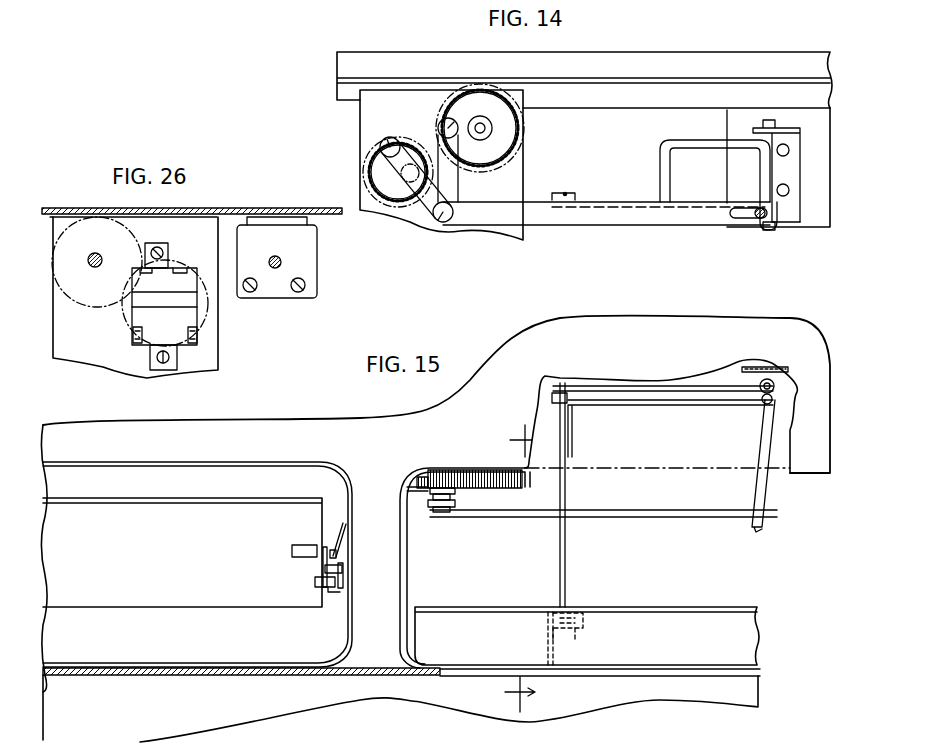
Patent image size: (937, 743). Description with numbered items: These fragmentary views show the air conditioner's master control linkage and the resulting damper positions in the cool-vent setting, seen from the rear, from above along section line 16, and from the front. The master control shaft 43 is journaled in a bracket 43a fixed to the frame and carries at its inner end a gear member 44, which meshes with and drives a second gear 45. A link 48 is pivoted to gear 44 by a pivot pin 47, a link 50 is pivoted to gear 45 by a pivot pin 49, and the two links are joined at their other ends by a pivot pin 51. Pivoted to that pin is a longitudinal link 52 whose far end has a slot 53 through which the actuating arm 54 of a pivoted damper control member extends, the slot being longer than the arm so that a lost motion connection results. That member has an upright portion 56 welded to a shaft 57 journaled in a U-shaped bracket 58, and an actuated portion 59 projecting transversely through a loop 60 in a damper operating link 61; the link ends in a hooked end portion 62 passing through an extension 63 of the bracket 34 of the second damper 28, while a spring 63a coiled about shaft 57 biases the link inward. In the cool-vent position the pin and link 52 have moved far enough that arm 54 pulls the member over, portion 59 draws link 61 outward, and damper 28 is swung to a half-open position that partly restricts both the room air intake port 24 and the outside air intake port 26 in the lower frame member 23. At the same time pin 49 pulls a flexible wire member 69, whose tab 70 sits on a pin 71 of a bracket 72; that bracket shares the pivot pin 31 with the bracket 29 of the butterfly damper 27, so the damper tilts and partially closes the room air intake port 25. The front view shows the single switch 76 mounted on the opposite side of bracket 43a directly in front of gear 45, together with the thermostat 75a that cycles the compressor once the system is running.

In FIG. 15, the fan and blower motor 16 is at (508, 568).
In FIG. 14, the lower frame member 23 is at (664, 60).
In FIG. 15, the lower frame member 23 is at (338, 450).
In FIG. 15, the room air intake port 24 is at (416, 599).
In FIG. 15, the room air intake port 25 is at (174, 657).
In FIG. 15, the outside air intake port 26 is at (451, 679).
In FIG. 15, the damper 27 is at (168, 578).
In FIG. 15, the second damper 28 is at (745, 584).
In FIG. 15, the bracket 29 is at (318, 573).
In FIG. 15, the pivot pin 31 is at (335, 596).
In FIG. 15, the bracket 34 is at (545, 643).
In FIG. 14, the shaft 43 is at (485, 126).
In FIG. 26, the shaft 43 is at (92, 261).
In FIG. 14, the bracket 43a is at (524, 237).
In FIG. 26, the bracket 43a is at (80, 358).
In FIG. 14, the gear member 44 is at (519, 144).
In FIG. 26, the gear member 44 is at (81, 307).
In FIG. 15, the gear member 44 is at (462, 470).
In FIG. 14, the second gear 45 is at (368, 174).
In FIG. 26, the second gear 45 is at (200, 318).
In FIG. 14, the pivot pin 47 is at (452, 125).
In FIG. 15, the pivot pin 47 is at (533, 492).
In FIG. 14, the link 48 is at (452, 182).
In FIG. 15, the link 48 is at (452, 492).
In FIG. 14, the pivot pin 49 is at (398, 132).
In FIG. 14, the link 50 is at (421, 195).
In FIG. 15, the link 50 is at (408, 492).
In FIG. 14, the pivot pin 51 is at (447, 222).
In FIG. 15, the pivot pin 51 is at (437, 505).
In FIG. 14, the longitudinal link 52 is at (618, 222).
In FIG. 15, the longitudinal link 52 is at (662, 518).
In FIG. 14, the slot 53 is at (739, 215).
In FIG. 14, the actuating arm 54 is at (761, 217).
In FIG. 15, the actuating arm 54 is at (762, 500).
In FIG. 14, the upright portion 56 is at (765, 180).
In FIG. 15, the upright portion 56 is at (773, 400).
In FIG. 14, the shaft 57 is at (785, 152).
In FIG. 15, the shaft 57 is at (770, 376).
In FIG. 14, the U-shaped bracket 58 is at (797, 222).
In FIG. 14, the actuated portion 59 is at (671, 145).
In FIG. 15, the actuated portion 59 is at (584, 394).
In FIG. 15, the loop 60 is at (542, 412).
In FIG. 15, the damper operating link 61 is at (567, 497).
In FIG. 15, the hooked end portion 62 is at (584, 622).
In FIG. 15, the extension 63 is at (575, 628).
In FIG. 15, the spring 63a is at (699, 377).
In FIG. 15, the flexible wire member 69 is at (340, 524).
In FIG. 15, the hook or tab 70 is at (322, 543).
In FIG. 15, the pin 71 is at (340, 558).
In FIG. 15, the bracket 72 is at (346, 570).
In FIG. 26, the thermostat 75a is at (301, 266).
In FIG. 26, the switch 76 is at (195, 328).